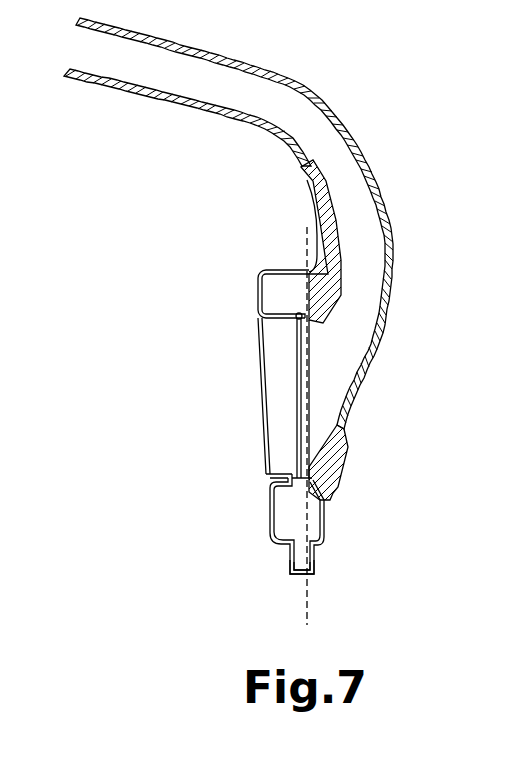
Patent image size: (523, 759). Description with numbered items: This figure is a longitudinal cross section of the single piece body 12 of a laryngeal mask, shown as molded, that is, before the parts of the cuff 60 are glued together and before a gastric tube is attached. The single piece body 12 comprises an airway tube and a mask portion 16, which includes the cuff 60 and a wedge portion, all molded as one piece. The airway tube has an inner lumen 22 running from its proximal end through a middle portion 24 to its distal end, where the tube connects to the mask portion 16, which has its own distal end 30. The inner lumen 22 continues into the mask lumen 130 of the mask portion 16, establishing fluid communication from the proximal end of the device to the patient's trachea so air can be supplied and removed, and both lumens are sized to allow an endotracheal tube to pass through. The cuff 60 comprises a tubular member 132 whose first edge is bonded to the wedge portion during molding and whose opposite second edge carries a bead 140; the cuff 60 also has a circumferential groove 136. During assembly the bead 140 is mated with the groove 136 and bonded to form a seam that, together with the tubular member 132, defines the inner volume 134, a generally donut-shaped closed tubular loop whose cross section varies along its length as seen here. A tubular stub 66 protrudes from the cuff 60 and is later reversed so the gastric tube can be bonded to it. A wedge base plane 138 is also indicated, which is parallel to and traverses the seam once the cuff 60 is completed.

The single piece body 12 is at (234, 321).
The mask portion 16 is at (386, 413).
The inner lumen 22 is at (234, 274).
The middle portion 24 is at (237, 223).
The distal end 30 is at (350, 478).
The cuff 60 is at (312, 525).
The tubular stub 66 is at (273, 562).
The mask lumen 130 is at (284, 423).
The tubular member 132 is at (242, 398).
The inner volume 134 is at (243, 294).
The circumferential groove 136 is at (379, 359).
The wedge base plane 138 is at (343, 426).
The bead 140 is at (255, 395).